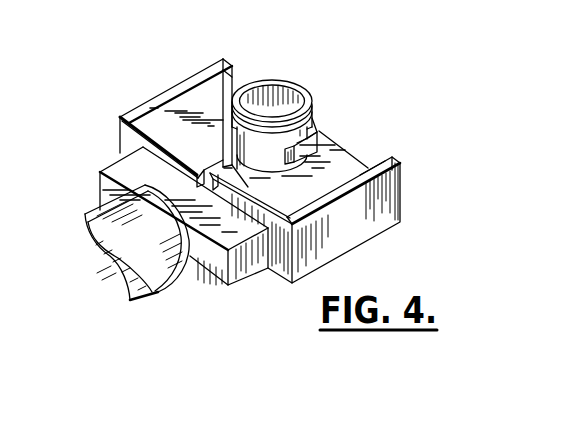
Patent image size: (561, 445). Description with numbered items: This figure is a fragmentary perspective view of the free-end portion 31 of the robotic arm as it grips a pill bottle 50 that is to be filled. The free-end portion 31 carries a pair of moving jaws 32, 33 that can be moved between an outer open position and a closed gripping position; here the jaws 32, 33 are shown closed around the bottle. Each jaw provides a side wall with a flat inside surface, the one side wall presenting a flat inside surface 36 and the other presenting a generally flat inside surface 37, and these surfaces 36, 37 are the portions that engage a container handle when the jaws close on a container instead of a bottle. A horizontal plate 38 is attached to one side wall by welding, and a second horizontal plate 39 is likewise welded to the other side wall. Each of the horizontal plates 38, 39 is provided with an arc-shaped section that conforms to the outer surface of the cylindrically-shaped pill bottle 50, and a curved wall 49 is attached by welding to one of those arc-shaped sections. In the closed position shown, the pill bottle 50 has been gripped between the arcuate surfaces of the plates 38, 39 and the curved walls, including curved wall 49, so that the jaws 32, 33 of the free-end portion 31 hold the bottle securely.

The free-end portion 31 is at (169, 270).
The jaw 32 is at (157, 97).
The jaw 33 is at (401, 176).
The flat inside surface 36 is at (236, 76).
The flat inside surface 37 is at (383, 157).
The horizontal plate 38 is at (120, 117).
The horizontal plate 39 is at (352, 147).
The curved wall 49 is at (309, 139).
The pill bottle 50 is at (289, 80).